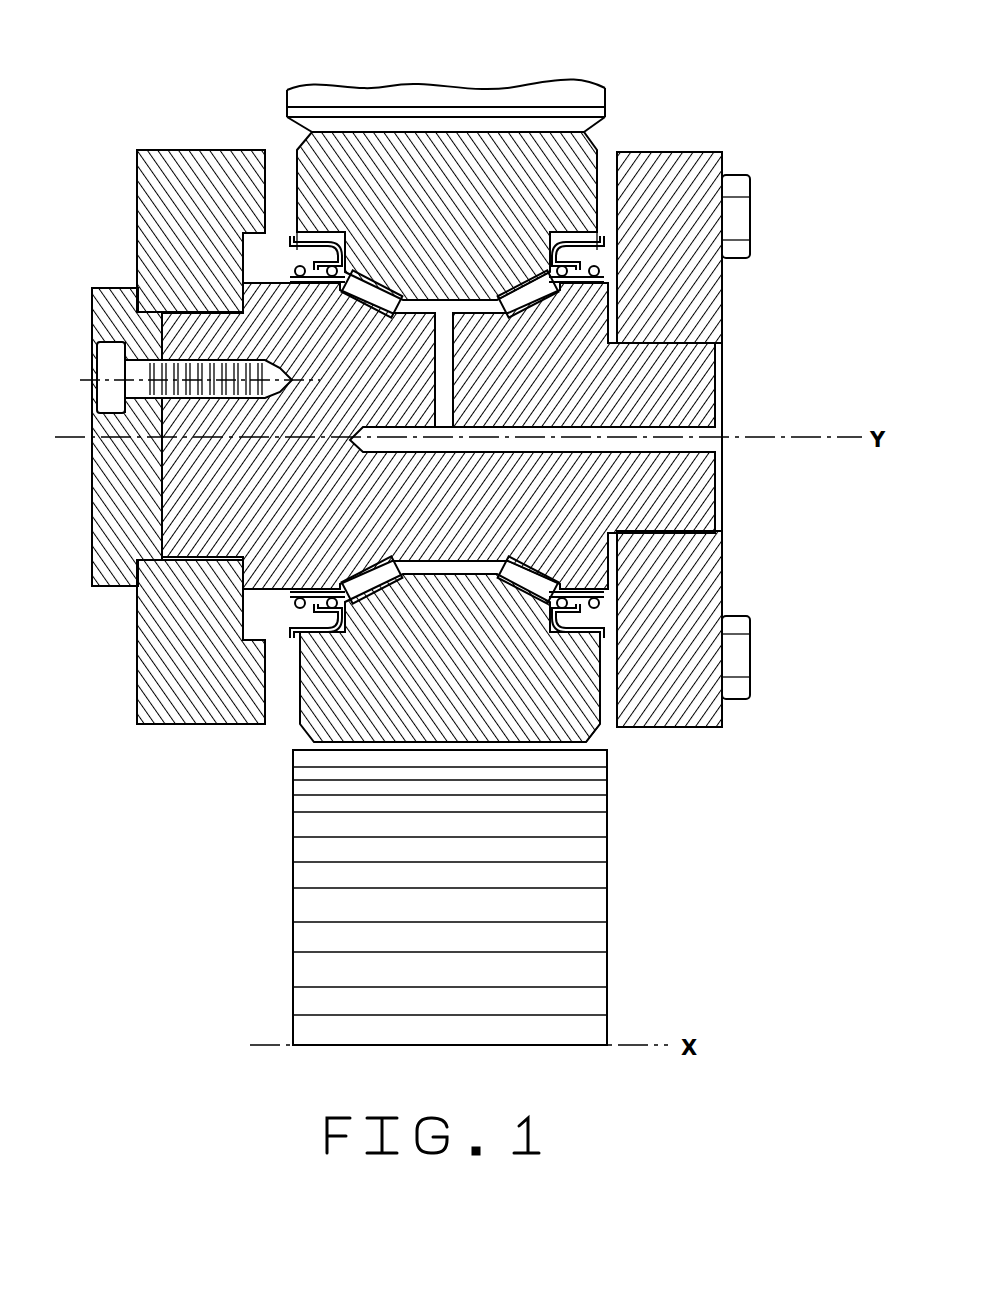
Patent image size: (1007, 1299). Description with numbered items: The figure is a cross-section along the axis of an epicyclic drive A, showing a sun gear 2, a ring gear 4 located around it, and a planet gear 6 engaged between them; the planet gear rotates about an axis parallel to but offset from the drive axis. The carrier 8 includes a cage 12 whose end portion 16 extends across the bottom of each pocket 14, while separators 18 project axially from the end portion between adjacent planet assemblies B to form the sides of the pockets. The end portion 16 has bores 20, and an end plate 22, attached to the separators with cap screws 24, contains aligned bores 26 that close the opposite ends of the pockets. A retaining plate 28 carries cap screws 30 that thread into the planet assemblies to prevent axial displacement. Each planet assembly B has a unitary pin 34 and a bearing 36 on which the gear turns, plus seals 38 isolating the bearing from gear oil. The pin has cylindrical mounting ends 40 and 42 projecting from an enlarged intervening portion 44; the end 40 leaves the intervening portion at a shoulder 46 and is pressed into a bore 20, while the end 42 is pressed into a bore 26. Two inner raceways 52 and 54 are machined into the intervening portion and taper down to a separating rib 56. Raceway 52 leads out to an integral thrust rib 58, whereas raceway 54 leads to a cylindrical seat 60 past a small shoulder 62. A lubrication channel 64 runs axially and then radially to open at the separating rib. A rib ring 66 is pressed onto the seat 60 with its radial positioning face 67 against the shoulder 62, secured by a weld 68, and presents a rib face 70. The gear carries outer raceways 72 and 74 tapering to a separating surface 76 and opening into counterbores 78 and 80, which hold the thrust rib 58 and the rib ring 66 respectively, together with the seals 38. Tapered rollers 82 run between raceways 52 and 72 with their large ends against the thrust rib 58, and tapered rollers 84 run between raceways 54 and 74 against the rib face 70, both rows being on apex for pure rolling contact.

The sun gear 2 is at (622, 924).
The ring gear 4 is at (562, 78).
The planet gear 6 is at (400, 160).
The carrier 8 is at (128, 208).
The cage 12 is at (140, 697).
The pocket 14 is at (257, 720).
The end portion 16 is at (180, 617).
The separator 18 is at (285, 170).
The bore 20 is at (140, 593).
The end plate 22 is at (725, 727).
The cap screw 24 is at (750, 215).
The bore 26 is at (700, 353).
The retaining plate 28 is at (110, 515).
The cap screw 30 is at (100, 380).
The pin 34 is at (205, 541).
The bearing 36 is at (367, 608).
The seal 38 is at (298, 253).
The mounting end 40 is at (190, 482).
The mounting end 42 is at (720, 482).
The intervening portion 44 is at (612, 548).
The shoulder 46 is at (240, 298).
The raceway 52 is at (352, 558).
The raceway 54 is at (545, 552).
The separating rib 56 is at (517, 612).
The thrust rib 58 is at (300, 280).
The cylindrical seat 60 is at (605, 288).
The small shoulder 62 is at (600, 277).
The lubrication channel 64 is at (660, 446).
The rib ring 66 is at (633, 625).
The radial positioning face 67 is at (583, 573).
The weld 68 is at (600, 595).
The rib face 70 is at (547, 288).
The outer raceway 72 is at (357, 280).
The outer raceway 74 is at (535, 280).
The separating surface 76 is at (446, 300).
The counterbore 78 is at (272, 250).
The counterbore 80 is at (598, 250).
The tapered roller 82 is at (383, 612).
The tapered roller 84 is at (535, 610).
The epicyclic drive A is at (195, 805).
The planet assembly B is at (742, 406).